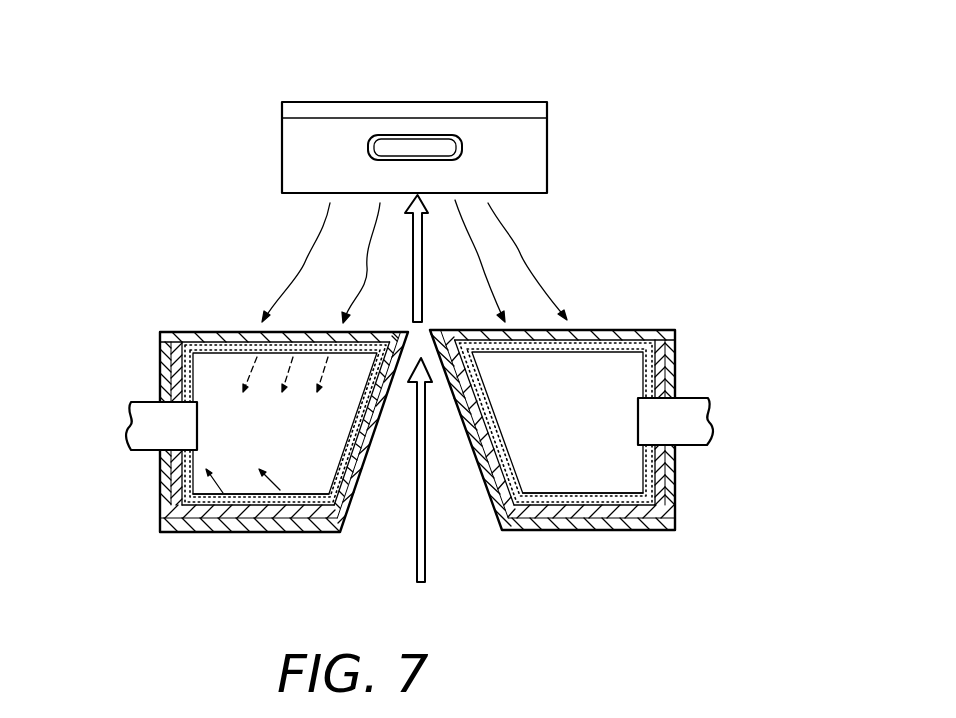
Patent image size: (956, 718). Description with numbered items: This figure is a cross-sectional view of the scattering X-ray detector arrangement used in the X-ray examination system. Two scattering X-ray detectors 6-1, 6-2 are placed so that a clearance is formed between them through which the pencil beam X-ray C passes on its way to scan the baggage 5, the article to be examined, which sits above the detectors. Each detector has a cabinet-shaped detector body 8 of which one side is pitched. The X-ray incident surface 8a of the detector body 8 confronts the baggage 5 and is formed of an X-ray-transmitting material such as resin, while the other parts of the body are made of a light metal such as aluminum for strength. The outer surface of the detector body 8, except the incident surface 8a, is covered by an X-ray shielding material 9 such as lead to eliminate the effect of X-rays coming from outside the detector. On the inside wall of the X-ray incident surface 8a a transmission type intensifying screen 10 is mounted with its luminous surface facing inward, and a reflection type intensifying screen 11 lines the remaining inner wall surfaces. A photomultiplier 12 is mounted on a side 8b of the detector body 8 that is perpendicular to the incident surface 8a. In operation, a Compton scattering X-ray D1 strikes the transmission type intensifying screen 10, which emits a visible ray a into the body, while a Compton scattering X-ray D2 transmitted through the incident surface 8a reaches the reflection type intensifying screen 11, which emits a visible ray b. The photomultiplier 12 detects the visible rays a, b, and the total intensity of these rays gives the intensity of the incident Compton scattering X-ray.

The baggage 5 is at (432, 110).
The scattering X-ray detector 6-1 is at (652, 255).
The scattering X-ray detector 6-2 is at (180, 288).
The detector body 8 is at (248, 533).
The X-ray incident surface 8a is at (232, 333).
The side of the detector body 8b is at (167, 505).
The X-ray shielding material 9 is at (197, 537).
The transmission type intensifying screen 10 is at (302, 332).
The reflection type intensifying screen 11 is at (340, 520).
The photomultiplier 12 is at (143, 410).
The pencil beam C is at (424, 276).
The Compton scattering X-ray D1 is at (305, 260).
The Compton scattering X-ray D2 is at (283, 492).
The visible ray a is at (286, 390).
The visible ray b is at (230, 492).